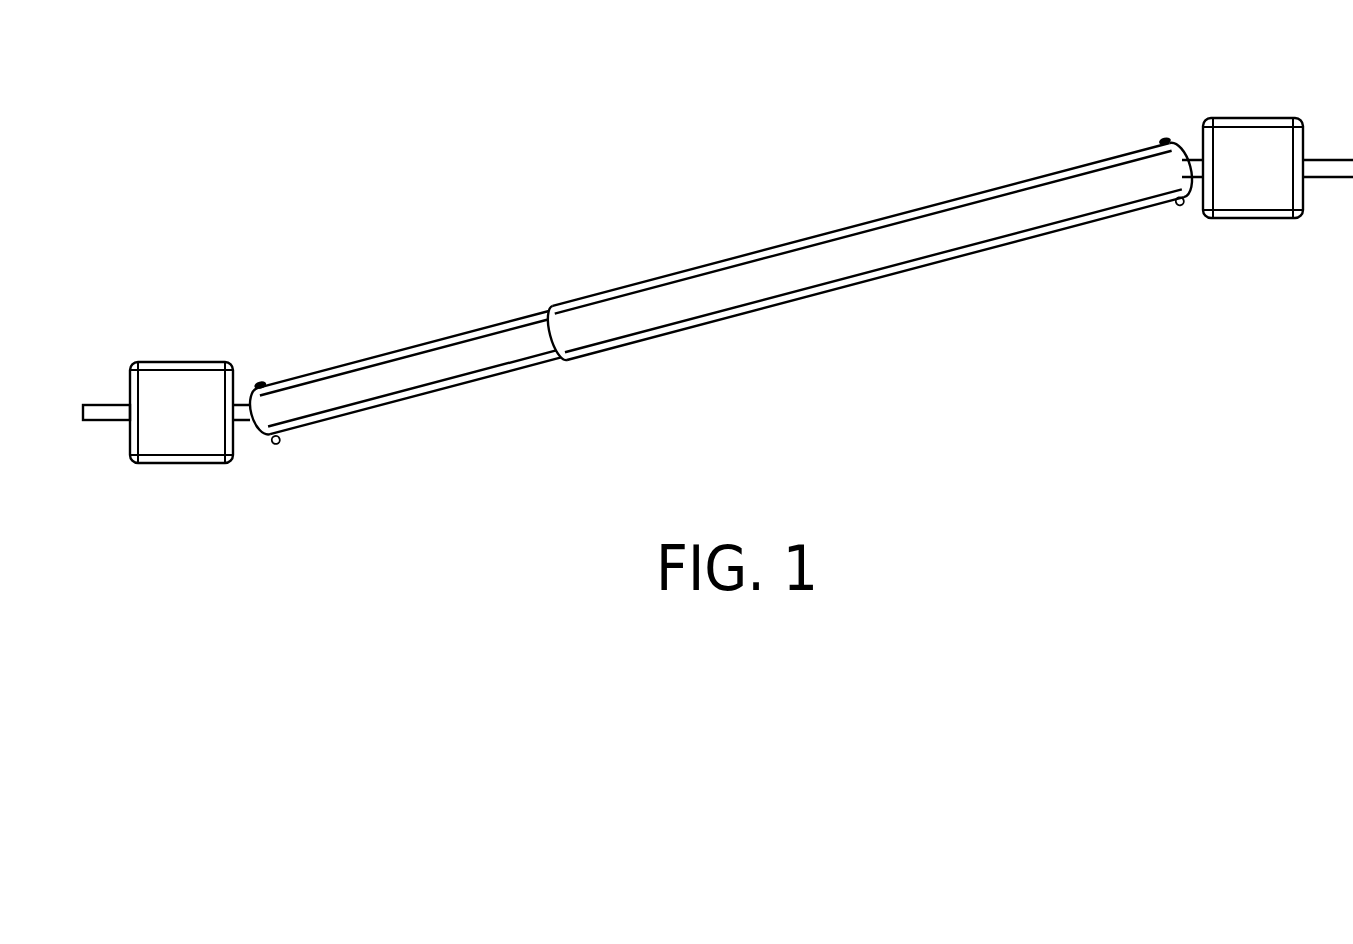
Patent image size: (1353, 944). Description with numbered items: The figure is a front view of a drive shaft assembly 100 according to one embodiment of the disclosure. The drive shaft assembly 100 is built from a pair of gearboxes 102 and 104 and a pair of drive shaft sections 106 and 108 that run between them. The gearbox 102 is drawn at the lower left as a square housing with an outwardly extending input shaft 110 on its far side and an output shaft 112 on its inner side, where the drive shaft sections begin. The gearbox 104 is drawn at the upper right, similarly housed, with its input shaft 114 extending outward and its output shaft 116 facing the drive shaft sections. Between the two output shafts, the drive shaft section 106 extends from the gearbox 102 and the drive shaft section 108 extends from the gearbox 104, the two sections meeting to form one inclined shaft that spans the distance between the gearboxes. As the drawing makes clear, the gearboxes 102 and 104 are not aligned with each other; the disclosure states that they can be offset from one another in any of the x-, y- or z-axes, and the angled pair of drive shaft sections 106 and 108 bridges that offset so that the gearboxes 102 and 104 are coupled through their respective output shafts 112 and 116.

The drive shaft assembly 100 is at (915, 72).
The gearbox 102 is at (165, 362).
The gearbox 104 is at (1282, 122).
The drive shaft section 106 is at (420, 347).
The drive shaft section 108 is at (640, 287).
The input shaft 110 is at (102, 416).
The output shaft 112 is at (239, 406).
The input shaft 114 is at (1327, 178).
The output shaft 116 is at (1195, 160).